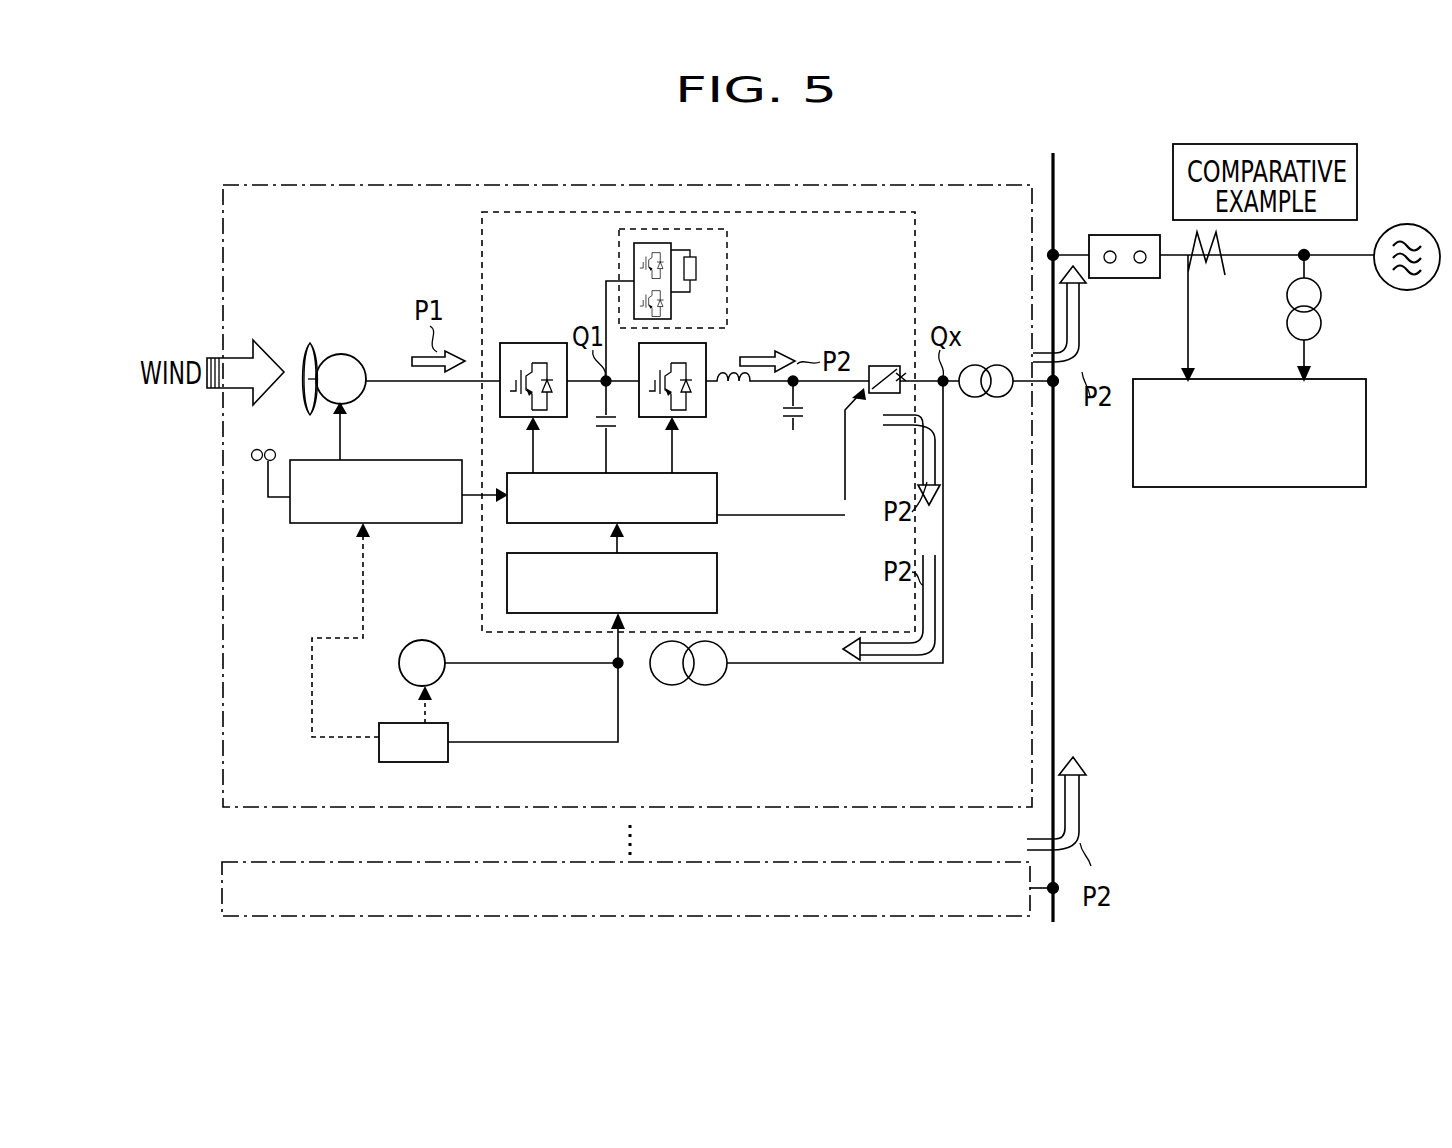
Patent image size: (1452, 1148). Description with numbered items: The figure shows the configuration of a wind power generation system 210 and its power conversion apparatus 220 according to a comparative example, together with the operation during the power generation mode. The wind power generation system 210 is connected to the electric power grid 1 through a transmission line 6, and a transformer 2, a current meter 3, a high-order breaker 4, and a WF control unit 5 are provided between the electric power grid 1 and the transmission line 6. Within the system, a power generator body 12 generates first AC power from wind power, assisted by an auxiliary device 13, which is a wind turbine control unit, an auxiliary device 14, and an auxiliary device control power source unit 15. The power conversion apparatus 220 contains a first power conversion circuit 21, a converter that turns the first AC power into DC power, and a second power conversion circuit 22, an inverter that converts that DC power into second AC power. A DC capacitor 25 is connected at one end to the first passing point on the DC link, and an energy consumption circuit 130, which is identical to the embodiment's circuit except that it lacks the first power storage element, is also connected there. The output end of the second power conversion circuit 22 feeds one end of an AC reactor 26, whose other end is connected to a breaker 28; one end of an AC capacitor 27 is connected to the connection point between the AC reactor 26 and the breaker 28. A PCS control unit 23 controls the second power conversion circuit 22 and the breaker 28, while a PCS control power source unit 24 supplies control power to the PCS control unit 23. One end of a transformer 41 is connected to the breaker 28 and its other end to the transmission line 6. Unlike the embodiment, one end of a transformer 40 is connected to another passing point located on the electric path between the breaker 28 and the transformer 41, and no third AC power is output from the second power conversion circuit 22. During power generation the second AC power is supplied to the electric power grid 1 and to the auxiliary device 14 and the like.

The electric power grid 1 is at (1407, 290).
The transformer 2 is at (1321, 318).
The current meter 3 is at (1225, 268).
The high-order breaker 4 is at (1110, 278).
The WF control unit 5 is at (1322, 487).
The transmission line 6 is at (1055, 518).
The power generator body 12 is at (341, 354).
The auxiliary device 13 is at (310, 523).
The auxiliary device 14 is at (398, 663).
The auxiliary device control power source unit 15 is at (379, 745).
The first power conversion circuit 21 is at (540, 343).
The second power conversion circuit 22 is at (707, 357).
The PCS control unit 23 is at (717, 497).
The PCS control power source unit 24 is at (717, 572).
The DC capacitor 25 is at (612, 430).
The AC reactor 26 is at (740, 386).
The AC capacitor 27 is at (803, 425).
The breaker 28 is at (890, 366).
The transformer 40 is at (705, 686).
The transformer 41 is at (980, 397).
The energy consumption circuit 130 is at (727, 256).
The wind power generation system 210 is at (223, 588).
The power conversion apparatus 220 is at (915, 246).